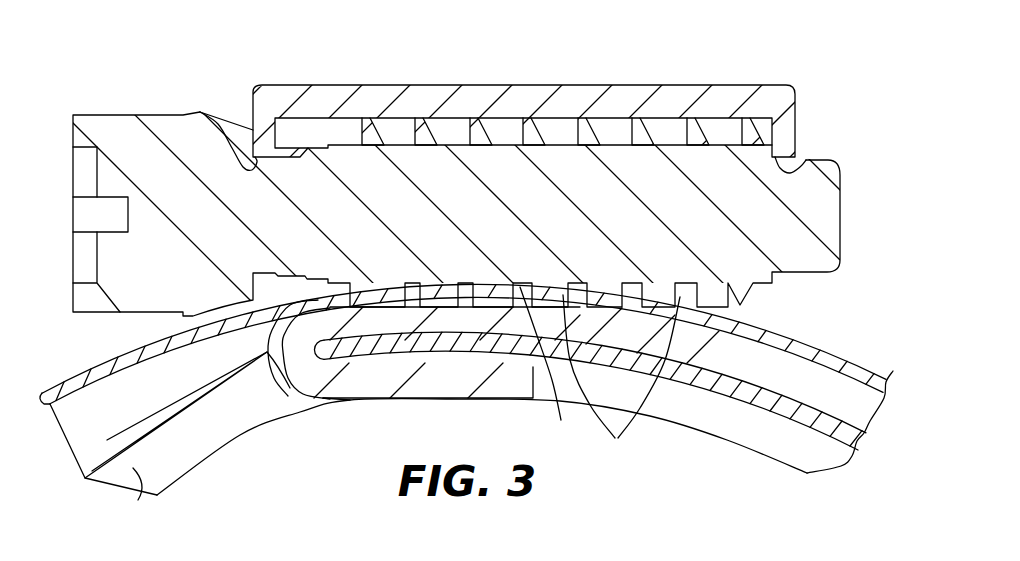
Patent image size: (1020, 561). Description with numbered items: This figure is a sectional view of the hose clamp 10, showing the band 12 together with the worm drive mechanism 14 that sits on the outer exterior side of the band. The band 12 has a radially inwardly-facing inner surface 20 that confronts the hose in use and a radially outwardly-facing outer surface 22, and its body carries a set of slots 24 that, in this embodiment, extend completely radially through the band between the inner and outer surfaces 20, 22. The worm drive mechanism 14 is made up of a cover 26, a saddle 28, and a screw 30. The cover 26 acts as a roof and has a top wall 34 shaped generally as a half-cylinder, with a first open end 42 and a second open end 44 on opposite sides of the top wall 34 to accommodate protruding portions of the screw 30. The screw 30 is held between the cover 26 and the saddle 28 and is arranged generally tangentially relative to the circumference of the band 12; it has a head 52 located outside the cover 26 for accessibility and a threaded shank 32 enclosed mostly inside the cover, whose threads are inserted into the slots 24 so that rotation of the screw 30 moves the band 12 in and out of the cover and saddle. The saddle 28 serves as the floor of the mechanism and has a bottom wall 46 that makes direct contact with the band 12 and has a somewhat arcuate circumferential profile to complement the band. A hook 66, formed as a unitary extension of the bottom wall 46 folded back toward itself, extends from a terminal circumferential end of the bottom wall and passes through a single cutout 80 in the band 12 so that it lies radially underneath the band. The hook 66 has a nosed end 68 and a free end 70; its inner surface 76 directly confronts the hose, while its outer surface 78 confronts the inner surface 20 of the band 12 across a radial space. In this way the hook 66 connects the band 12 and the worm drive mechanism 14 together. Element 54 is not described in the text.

The hose clamp 10 is at (148, 72).
The band 12 is at (186, 478).
The worm drive mechanism 14 is at (692, 82).
The inner surface 20 is at (130, 510).
The outer surface 22 is at (107, 440).
The slots 24 is at (130, 353).
The cover 26 is at (480, 88).
The saddle 28 is at (728, 356).
The screw 30 is at (840, 163).
The threaded shank 32 is at (573, 182).
The top wall 34 is at (366, 100).
The first open end 42 is at (247, 160).
The second open end 44 is at (800, 167).
The bottom wall 46 is at (597, 327).
The head 52 is at (120, 172).
The sealing lips 54 is at (621, 376).
The hook 66 is at (427, 383).
The nosed end 68 is at (300, 398).
The free end 70 is at (548, 366).
The inner surface 76 is at (343, 400).
The outer surface 78 is at (447, 358).
The cutout 80 is at (275, 380).